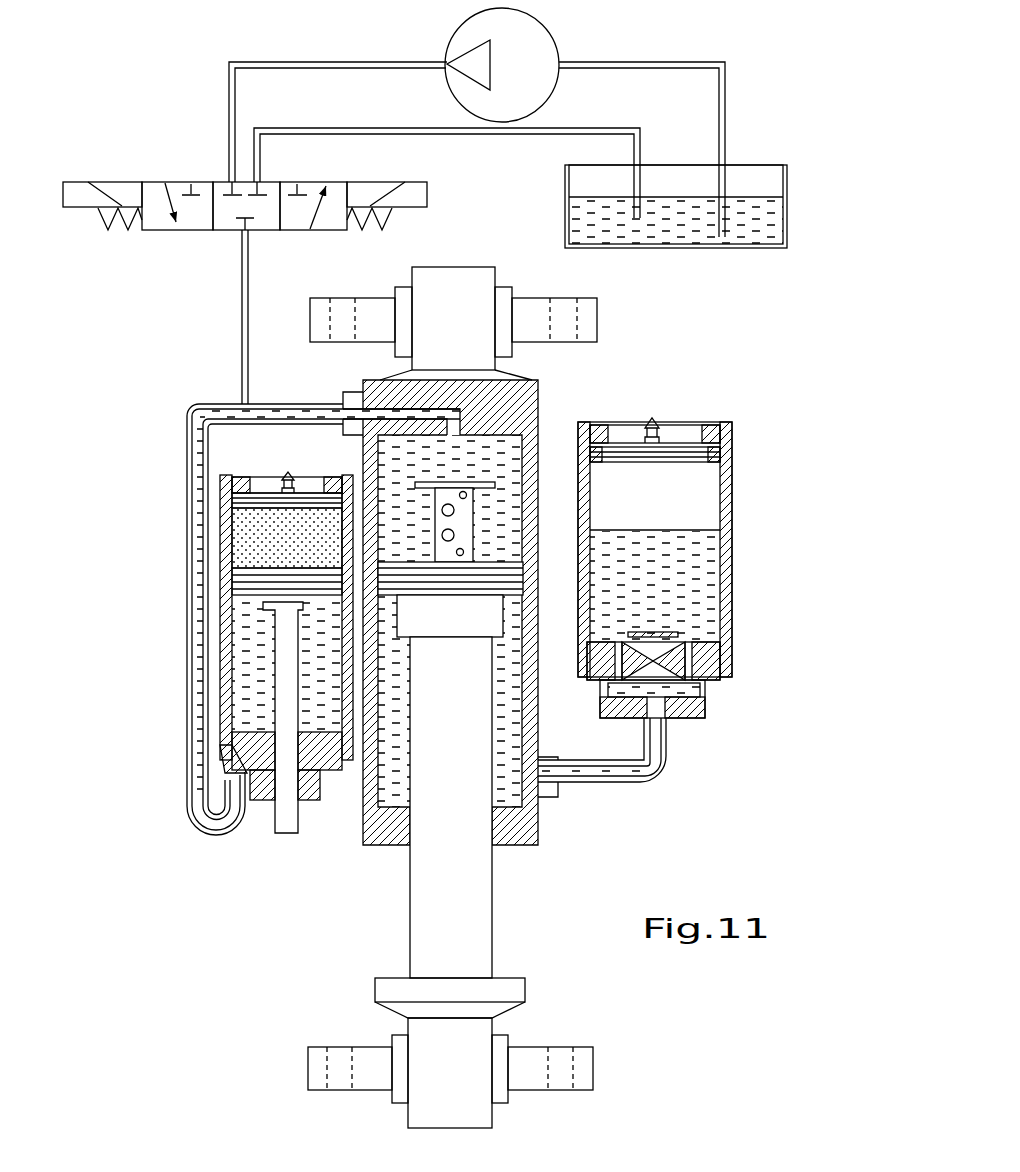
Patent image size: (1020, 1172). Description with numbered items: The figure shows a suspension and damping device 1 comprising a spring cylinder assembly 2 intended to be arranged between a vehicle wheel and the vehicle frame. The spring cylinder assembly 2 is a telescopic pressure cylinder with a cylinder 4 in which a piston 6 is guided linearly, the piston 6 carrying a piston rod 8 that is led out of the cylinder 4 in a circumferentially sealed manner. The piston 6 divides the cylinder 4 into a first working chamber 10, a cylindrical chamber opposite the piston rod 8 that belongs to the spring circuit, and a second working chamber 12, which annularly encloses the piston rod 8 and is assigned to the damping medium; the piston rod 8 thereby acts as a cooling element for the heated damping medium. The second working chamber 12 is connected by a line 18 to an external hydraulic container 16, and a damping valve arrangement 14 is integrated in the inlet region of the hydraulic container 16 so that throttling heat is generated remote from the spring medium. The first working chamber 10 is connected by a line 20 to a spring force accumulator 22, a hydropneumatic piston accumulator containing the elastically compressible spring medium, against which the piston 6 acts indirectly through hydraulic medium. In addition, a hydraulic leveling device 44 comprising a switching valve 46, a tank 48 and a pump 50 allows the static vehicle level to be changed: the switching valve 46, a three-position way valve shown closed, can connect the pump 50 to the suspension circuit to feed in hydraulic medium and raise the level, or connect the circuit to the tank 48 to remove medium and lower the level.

The suspension and damping device 1 is at (458, 697).
The spring cylinder assembly 2 is at (450, 751).
The cylinder 4 is at (534, 693).
The piston 6 is at (505, 560).
The piston rod 8 is at (476, 888).
The first working chamber 10 is at (520, 456).
The second working chamber 12 is at (392, 773).
The damping valve arrangement 14 is at (721, 692).
The hydraulic container 16 is at (687, 568).
The line 18 is at (645, 785).
The line 20 is at (208, 403).
The spring force accumulator 22 is at (220, 475).
The hydraulic leveling device 44 is at (245, 214).
The switching valve 46 is at (213, 182).
The tank 48 is at (787, 183).
The pump 50 is at (448, 44).